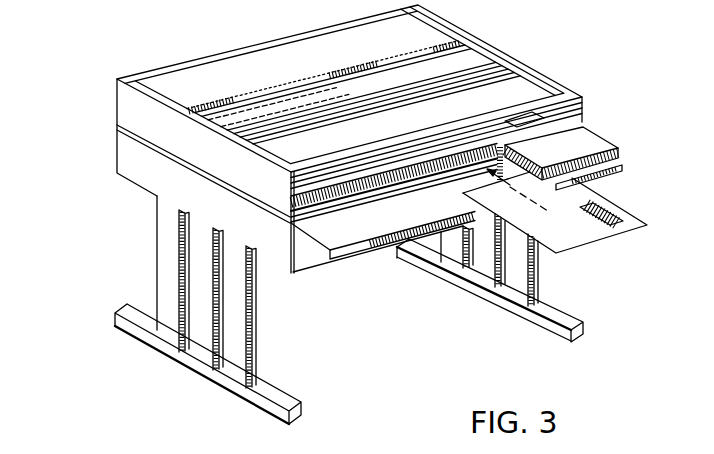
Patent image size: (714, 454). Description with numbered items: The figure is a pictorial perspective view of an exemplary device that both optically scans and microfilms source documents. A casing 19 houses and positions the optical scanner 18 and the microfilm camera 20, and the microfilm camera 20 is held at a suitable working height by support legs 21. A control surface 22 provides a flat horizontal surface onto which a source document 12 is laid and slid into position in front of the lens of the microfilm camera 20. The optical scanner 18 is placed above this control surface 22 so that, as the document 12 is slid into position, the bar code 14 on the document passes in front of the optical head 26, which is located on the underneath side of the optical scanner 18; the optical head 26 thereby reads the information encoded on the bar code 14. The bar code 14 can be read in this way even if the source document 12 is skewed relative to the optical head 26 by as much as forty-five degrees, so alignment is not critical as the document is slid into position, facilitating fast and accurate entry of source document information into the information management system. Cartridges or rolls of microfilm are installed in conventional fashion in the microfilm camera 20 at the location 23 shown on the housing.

The source document 12 is at (586, 250).
The bar code 14 is at (623, 221).
The optical scanner 18 is at (598, 135).
The casing 19 is at (97, 106).
The microfilm camera 20 is at (536, 74).
The support legs 21 is at (174, 333).
The control surface 22 is at (362, 228).
The microfilm installation location 23 is at (532, 118).
The optical head 26 is at (606, 180).